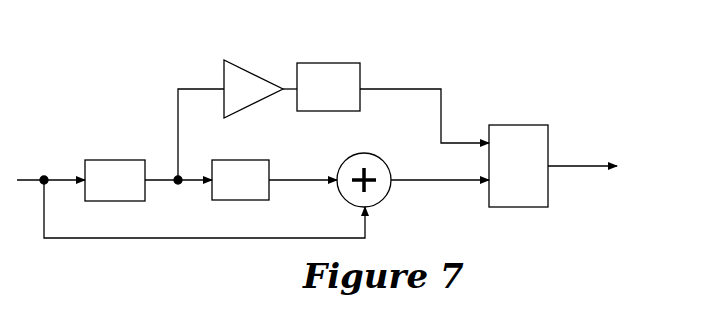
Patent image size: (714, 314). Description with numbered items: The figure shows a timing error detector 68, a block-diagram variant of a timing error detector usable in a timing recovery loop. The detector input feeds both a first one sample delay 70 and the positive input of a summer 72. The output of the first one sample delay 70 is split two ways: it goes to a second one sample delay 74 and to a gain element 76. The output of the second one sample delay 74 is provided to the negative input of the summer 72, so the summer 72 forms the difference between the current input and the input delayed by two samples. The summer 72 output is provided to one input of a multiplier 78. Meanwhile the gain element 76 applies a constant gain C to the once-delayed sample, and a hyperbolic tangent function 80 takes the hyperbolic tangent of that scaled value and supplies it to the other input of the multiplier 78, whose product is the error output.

The timing error detector 68 is at (507, 73).
The first one sample delay 70 is at (143, 159).
The summer 72 is at (380, 155).
The second one sample delay 74 is at (265, 157).
The gain element 76 is at (250, 73).
The multiplier 78 is at (538, 125).
The hyperbolic tangent function 80 is at (342, 63).